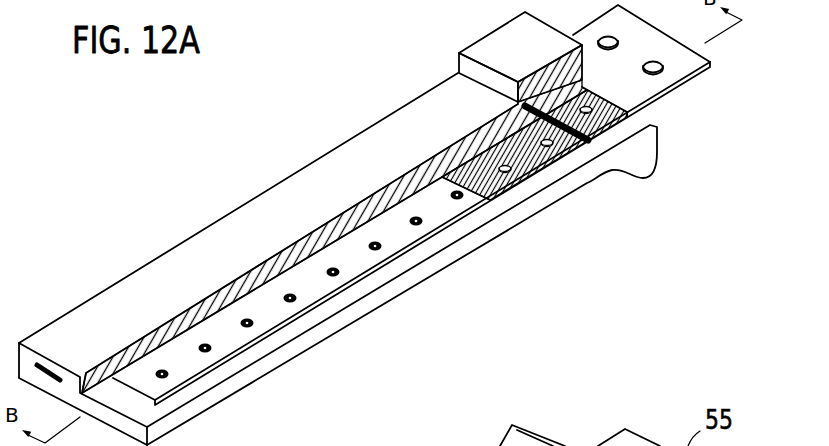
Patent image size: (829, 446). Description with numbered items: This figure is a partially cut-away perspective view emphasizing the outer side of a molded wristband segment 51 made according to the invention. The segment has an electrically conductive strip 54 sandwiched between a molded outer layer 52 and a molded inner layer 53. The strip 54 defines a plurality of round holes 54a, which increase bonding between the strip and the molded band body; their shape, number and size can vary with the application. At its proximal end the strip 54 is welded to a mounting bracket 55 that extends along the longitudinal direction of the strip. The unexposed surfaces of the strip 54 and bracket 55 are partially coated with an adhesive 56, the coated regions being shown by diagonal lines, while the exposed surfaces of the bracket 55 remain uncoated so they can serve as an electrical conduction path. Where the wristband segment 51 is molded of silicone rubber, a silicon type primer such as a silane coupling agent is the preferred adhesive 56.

The wristband segment 51 is at (268, 178).
The molded outer layer 52 is at (177, 265).
The molded inner layer 53 is at (248, 380).
The electrically conductive strip 54 is at (390, 260).
The round holes 54a is at (294, 300).
The mounting bracket 55 is at (708, 66).
The adhesive 56 is at (553, 162).